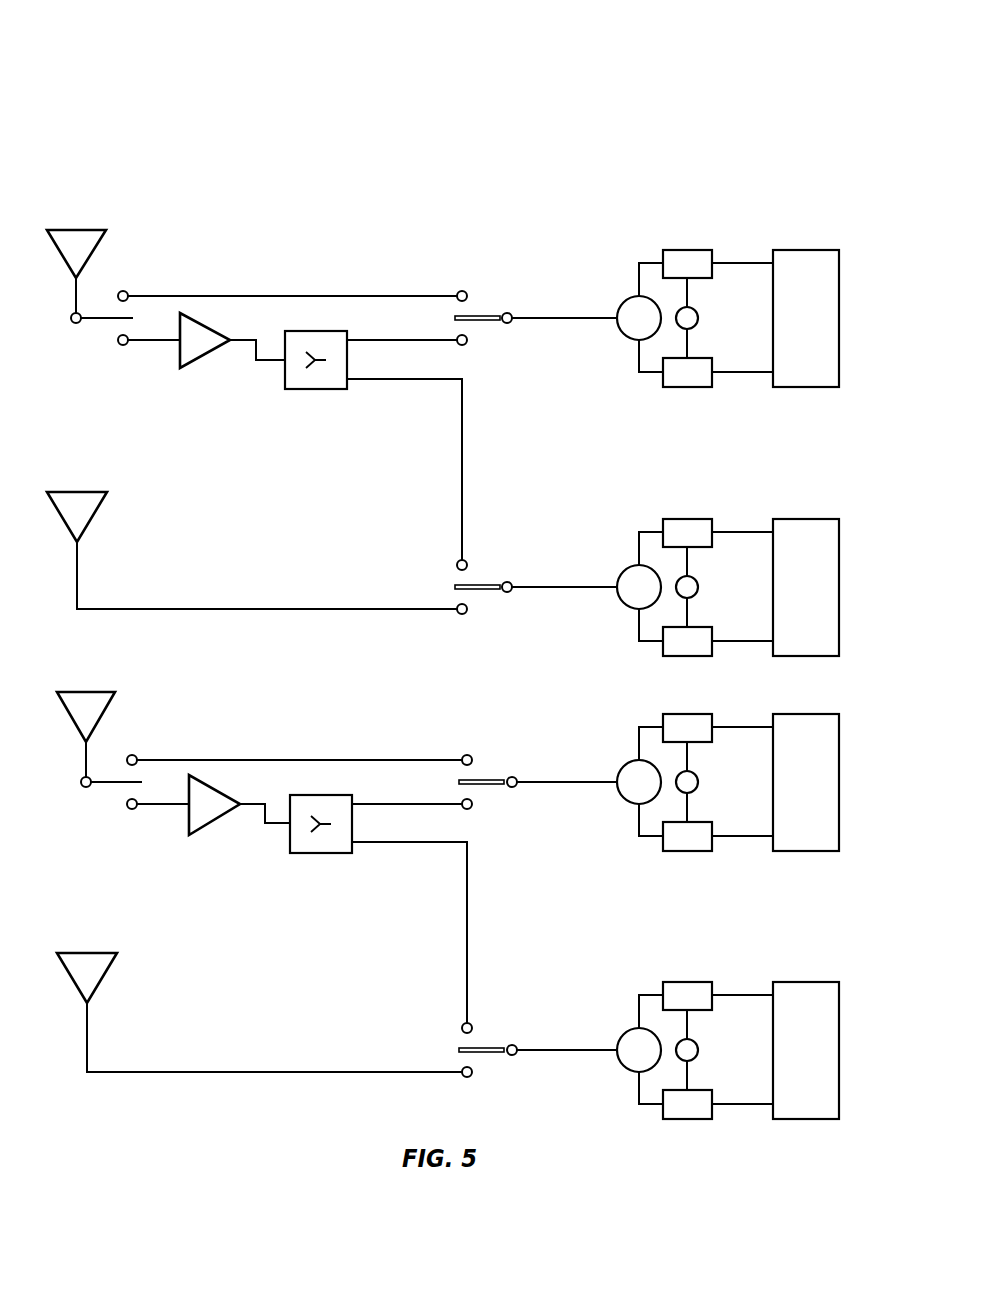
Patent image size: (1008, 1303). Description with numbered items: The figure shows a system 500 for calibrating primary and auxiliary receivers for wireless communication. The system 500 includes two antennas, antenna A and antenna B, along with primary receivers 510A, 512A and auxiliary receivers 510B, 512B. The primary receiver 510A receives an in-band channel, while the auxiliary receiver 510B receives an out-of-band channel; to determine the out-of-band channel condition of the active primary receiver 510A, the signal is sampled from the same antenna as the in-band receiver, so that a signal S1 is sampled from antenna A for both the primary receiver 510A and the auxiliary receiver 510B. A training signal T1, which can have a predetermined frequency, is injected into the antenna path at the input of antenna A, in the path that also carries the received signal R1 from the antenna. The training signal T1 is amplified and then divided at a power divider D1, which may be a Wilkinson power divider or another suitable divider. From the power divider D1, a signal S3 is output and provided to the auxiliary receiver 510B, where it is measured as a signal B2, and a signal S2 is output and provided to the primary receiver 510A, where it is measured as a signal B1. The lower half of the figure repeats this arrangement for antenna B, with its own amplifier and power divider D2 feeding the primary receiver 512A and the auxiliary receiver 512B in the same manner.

The system 500 is at (170, 97).
The primary receiver 510A is at (769, 318).
The auxiliary receiver 510B is at (769, 587).
The primary receiver 512A is at (769, 782).
The auxiliary receiver 512B is at (769, 1050).
The receive antenna R1 is at (55, 254).
The training signal T1 is at (76, 315).
The signal S1 is at (179, 363).
The signal S2 is at (512, 341).
The signal S3 is at (483, 526).
The signal B1 is at (708, 318).
The signal B2 is at (708, 587).
The power divider D1 is at (348, 445).
The power divider D2 is at (356, 909).